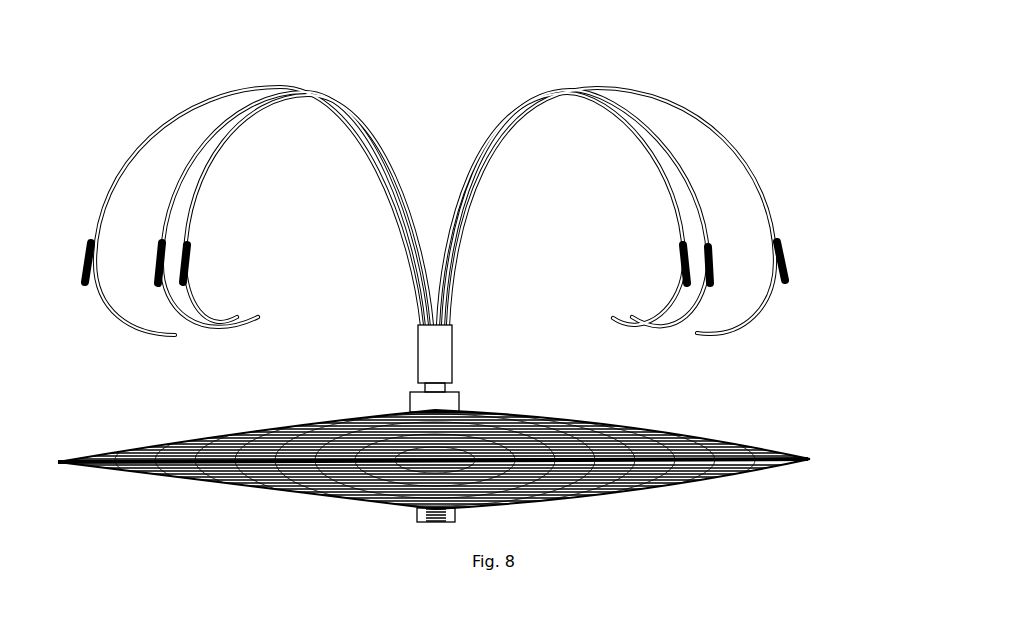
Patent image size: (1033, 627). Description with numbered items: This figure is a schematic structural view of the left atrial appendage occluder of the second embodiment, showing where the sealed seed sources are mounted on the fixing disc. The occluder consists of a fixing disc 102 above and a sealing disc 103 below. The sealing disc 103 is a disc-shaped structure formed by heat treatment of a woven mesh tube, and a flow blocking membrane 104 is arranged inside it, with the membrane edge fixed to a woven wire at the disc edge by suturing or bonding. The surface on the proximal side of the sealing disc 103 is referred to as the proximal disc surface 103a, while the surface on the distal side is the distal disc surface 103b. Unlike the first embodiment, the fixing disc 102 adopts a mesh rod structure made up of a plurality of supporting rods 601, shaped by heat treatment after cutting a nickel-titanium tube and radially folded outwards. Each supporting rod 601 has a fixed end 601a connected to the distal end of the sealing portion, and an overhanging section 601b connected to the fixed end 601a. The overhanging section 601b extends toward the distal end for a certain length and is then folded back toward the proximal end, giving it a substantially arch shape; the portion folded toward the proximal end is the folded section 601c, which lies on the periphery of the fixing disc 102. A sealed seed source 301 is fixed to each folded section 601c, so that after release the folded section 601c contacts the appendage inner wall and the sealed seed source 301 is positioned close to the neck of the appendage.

The fixing disc 102 is at (500, 198).
The sealing disc 103 is at (484, 460).
The proximal disc surface 103a is at (742, 473).
The distal disc surface 103b is at (745, 436).
The flow blocking membrane 104 is at (692, 478).
The sealed seed source 301 is at (790, 203).
The supporting rod 601 is at (435, 198).
The fixed end 601a is at (472, 348).
The overhanging section 601b is at (618, 175).
The folded section 601c is at (747, 208).